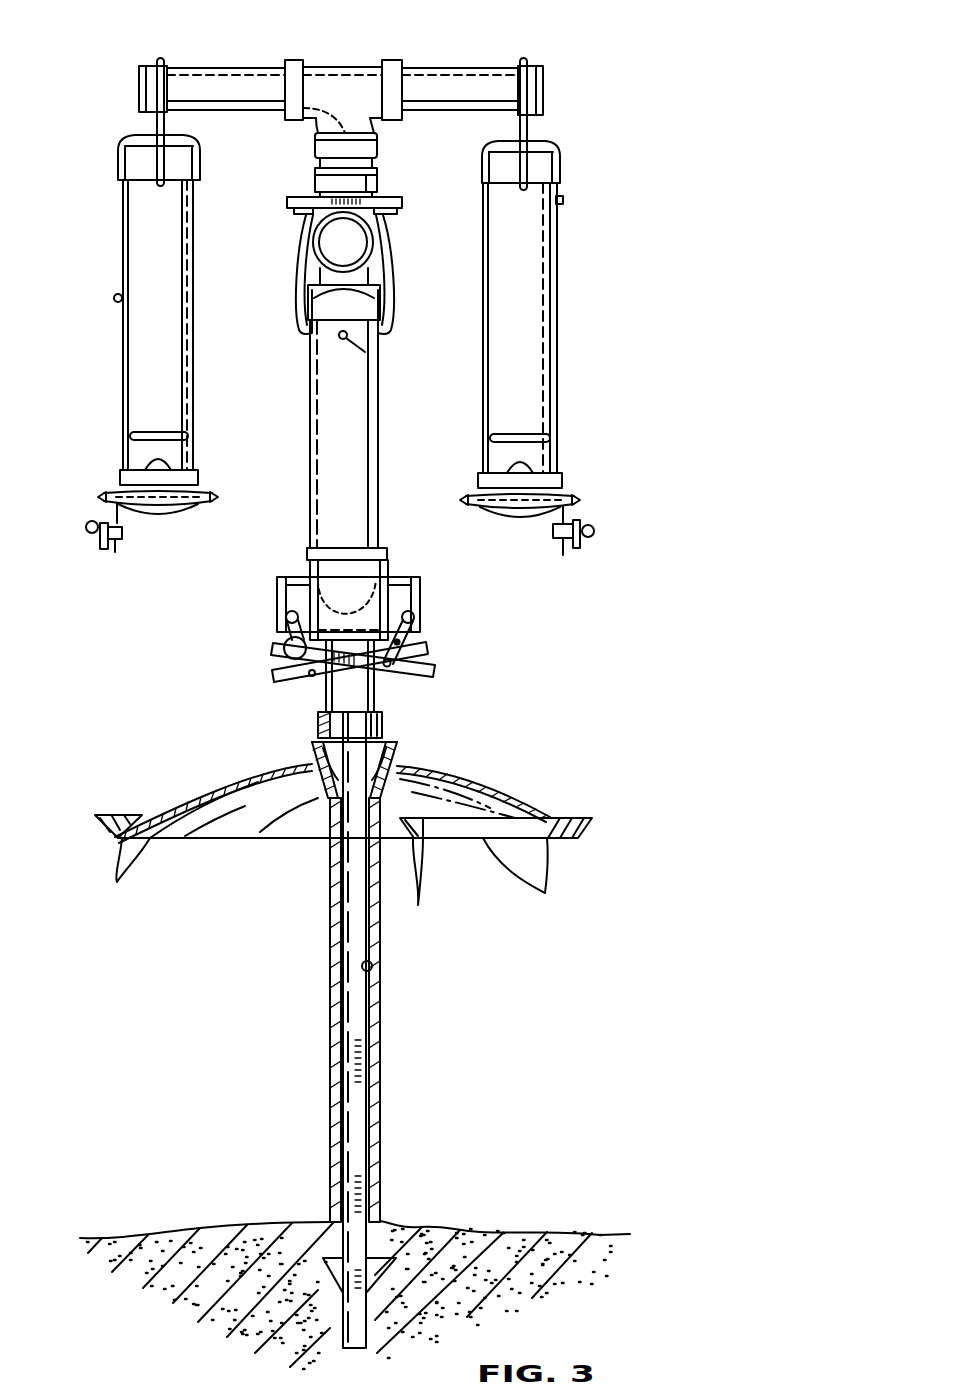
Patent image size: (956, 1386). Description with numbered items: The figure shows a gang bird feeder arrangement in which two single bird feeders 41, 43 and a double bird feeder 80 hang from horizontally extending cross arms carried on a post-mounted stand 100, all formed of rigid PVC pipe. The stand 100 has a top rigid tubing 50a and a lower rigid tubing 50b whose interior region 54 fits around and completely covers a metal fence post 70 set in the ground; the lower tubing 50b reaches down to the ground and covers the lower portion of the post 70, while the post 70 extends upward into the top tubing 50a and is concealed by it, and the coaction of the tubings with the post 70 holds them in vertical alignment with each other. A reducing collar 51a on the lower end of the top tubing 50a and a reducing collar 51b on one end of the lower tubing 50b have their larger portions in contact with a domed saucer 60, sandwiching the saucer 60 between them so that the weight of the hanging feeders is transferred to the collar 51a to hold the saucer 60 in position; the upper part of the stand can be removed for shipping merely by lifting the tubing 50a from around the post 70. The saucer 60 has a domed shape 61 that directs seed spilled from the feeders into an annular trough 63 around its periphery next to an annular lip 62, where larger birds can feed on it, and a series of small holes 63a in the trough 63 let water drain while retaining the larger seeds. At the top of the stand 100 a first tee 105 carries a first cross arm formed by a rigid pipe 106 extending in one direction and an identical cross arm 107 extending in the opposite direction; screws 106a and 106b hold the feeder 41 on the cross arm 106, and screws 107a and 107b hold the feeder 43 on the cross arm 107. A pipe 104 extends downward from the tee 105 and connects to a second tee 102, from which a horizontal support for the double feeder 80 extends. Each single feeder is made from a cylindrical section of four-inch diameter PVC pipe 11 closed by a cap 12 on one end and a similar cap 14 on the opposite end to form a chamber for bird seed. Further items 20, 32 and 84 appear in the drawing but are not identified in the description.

The post-mounted stand 100 is at (646, 104).
The first tee 105 is at (326, 73).
The rigid pipe cross arm 106 is at (232, 71).
The screw 106a is at (154, 62).
The screw 106b is at (170, 60).
The cross arm 107 is at (466, 108).
The screw 107a is at (534, 62).
The screw 107b is at (522, 58).
The pipe 104 is at (334, 160).
The second tee 102 is at (379, 175).
The cap 12 is at (122, 156).
The PVC pipe 11 is at (188, 326).
The cap 14 is at (120, 475).
The clamp with valve 20 is at (157, 486).
The pin / hole 32 is at (115, 303).
The single bird feeder 41 is at (205, 282).
The single bird feeder 43 is at (566, 260).
The double bird feeder 80 is at (305, 440).
The handle bars 84 is at (262, 672).
The top rigid tubing 50a is at (360, 688).
The reducing collar 51a is at (316, 724).
The reducing collar 51b is at (322, 786).
The domed saucer 60 is at (462, 765).
The domed shape 61 is at (487, 792).
The annular lip 62 is at (584, 815).
The annular trough 63 is at (422, 838).
The small holes 63a is at (343, 885).
The interior region 54 is at (372, 969).
The lower rigid tubing 50b is at (382, 1076).
The metal fence post 70 is at (366, 1165).